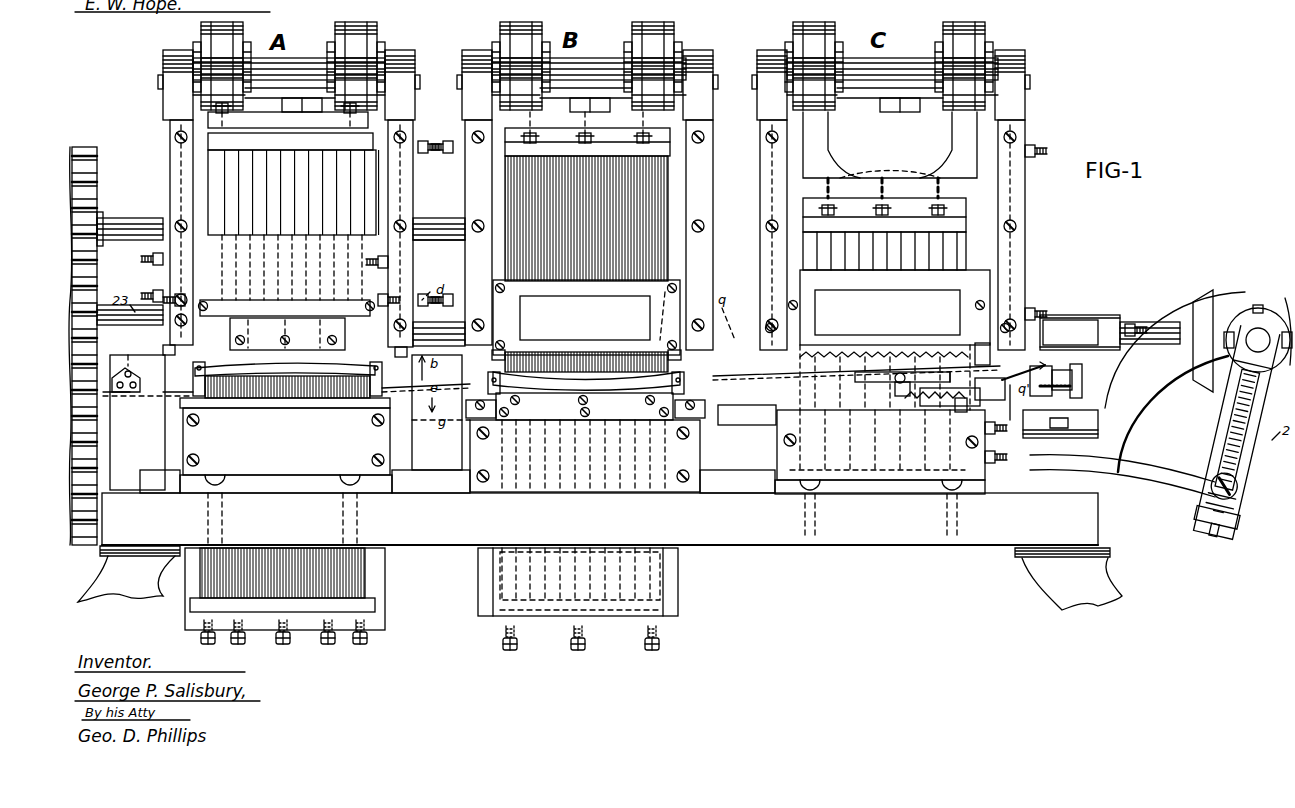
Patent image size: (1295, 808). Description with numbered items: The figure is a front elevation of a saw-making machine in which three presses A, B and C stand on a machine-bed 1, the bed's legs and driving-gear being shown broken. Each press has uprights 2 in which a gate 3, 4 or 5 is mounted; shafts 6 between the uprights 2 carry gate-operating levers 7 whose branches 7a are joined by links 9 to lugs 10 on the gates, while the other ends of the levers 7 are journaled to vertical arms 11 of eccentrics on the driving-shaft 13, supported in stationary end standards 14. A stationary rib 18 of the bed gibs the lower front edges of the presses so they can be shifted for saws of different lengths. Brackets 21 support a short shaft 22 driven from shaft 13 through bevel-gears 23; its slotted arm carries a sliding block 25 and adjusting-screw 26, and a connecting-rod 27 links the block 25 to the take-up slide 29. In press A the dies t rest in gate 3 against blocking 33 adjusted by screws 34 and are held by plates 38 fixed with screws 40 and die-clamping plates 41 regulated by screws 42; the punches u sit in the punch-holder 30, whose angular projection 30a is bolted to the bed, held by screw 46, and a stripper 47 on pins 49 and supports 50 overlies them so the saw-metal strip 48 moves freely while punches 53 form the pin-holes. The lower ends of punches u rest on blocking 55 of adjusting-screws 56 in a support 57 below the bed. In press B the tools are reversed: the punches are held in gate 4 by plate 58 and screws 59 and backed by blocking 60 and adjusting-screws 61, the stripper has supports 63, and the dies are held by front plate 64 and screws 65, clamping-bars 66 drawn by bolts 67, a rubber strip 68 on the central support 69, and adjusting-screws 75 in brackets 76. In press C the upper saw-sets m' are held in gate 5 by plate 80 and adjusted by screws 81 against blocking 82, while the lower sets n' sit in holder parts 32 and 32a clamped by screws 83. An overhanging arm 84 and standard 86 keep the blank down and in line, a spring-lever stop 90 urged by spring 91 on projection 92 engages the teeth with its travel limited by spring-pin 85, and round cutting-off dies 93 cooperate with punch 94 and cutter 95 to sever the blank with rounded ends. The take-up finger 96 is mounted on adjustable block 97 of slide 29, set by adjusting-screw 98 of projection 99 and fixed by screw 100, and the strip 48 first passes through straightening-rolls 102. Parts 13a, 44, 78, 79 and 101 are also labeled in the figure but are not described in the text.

The machine-bed 1 is at (600, 519).
The uprights or side frames 2 is at (160, 98).
The gate of first press 3 is at (186, 170).
The gate of second press 4 is at (500, 162).
The gate of third press 5 is at (890, 145).
The shafts 6 is at (312, 60).
The gate-operating levers 7 is at (594, 90).
The branches of levers 7a is at (203, 26).
The links 9 is at (205, 24).
The lugs 10 is at (595, 99).
The vertical arms 11 is at (602, 98).
The driving-shaft 13 is at (135, 306).
The shaft 13a is at (145, 222).
The end standards 14 is at (1088, 315).
The stationary rib of the bed 18 is at (457, 481).
The brackets 21 is at (1211, 432).
The short shaft 22 is at (1258, 338).
The bevel-gears 23 is at (1225, 296).
The sliding block 25 is at (1240, 506).
The adjusting-screw 26 is at (1225, 424).
The connecting-rod 27 is at (1168, 476).
The take-up slide 29 is at (747, 415).
The punch-holder 30 is at (286, 441).
The angular projection 30a is at (286, 510).
The holder part 32 is at (881, 445).
The holder part 32a is at (880, 507).
The blocking 33 is at (290, 141).
The screws 34 is at (232, 110).
The plate 38 is at (285, 285).
The screws 40 is at (203, 302).
The die-clamping plates 41 is at (190, 370).
The screws 42 is at (296, 330).
The set screws 44 is at (183, 298).
The screw 46 is at (198, 458).
The stripper 47 is at (285, 367).
The saw-metal strip 48 is at (551, 389).
The pins 49 is at (190, 378).
The supports 50 is at (206, 406).
The punches 53 is at (198, 354).
The blocking 55 is at (282, 603).
The adjusting-screws 56 is at (322, 646).
The support 57 is at (385, 600).
The plate 58 is at (585, 318).
The screws 59 is at (500, 338).
The blocking 60 is at (587, 142).
The adjusting-screws 61 is at (632, 138).
The stripper supports 63 is at (490, 357).
The front plate 64 is at (585, 456).
The screws 65 is at (470, 435).
The clamping-bars 66 is at (466, 405).
The bolts 67 is at (480, 394).
The rubber strip 68 is at (586, 383).
The central support 69 is at (888, 333).
The adjusting-screws 75 is at (640, 650).
The brackets 76 is at (488, 586).
The bar 78 is at (578, 402).
The screw 79 is at (538, 420).
The plate 80 is at (890, 307).
The screws 81 is at (925, 180).
The blocking 82 is at (884, 215).
The screws 83 is at (798, 441).
The overhanging arm 84 is at (950, 376).
The spring-pin 85 is at (942, 404).
The standard 86 is at (991, 383).
The spring-lever stop 90 is at (902, 371).
The spring 91 is at (1011, 407).
The projection 92 is at (898, 394).
The cutting-off dies 93 is at (1005, 378).
The punch 94 is at (990, 358).
The cutter 95 is at (970, 411).
The take-up finger 96 is at (1045, 373).
The adjustable block 97 is at (1065, 378).
The adjusting-screw 98 is at (1076, 388).
The projection 99 is at (1082, 378).
The screw 100 is at (1035, 440).
The bracket 101 is at (1080, 422).
The straightening-rolls 102 is at (134, 422).
The dies t is at (700, 590).
The punches u is at (330, 578).
The saw-setting tools m is at (884, 251).
The saw-setting tools n is at (800, 380).